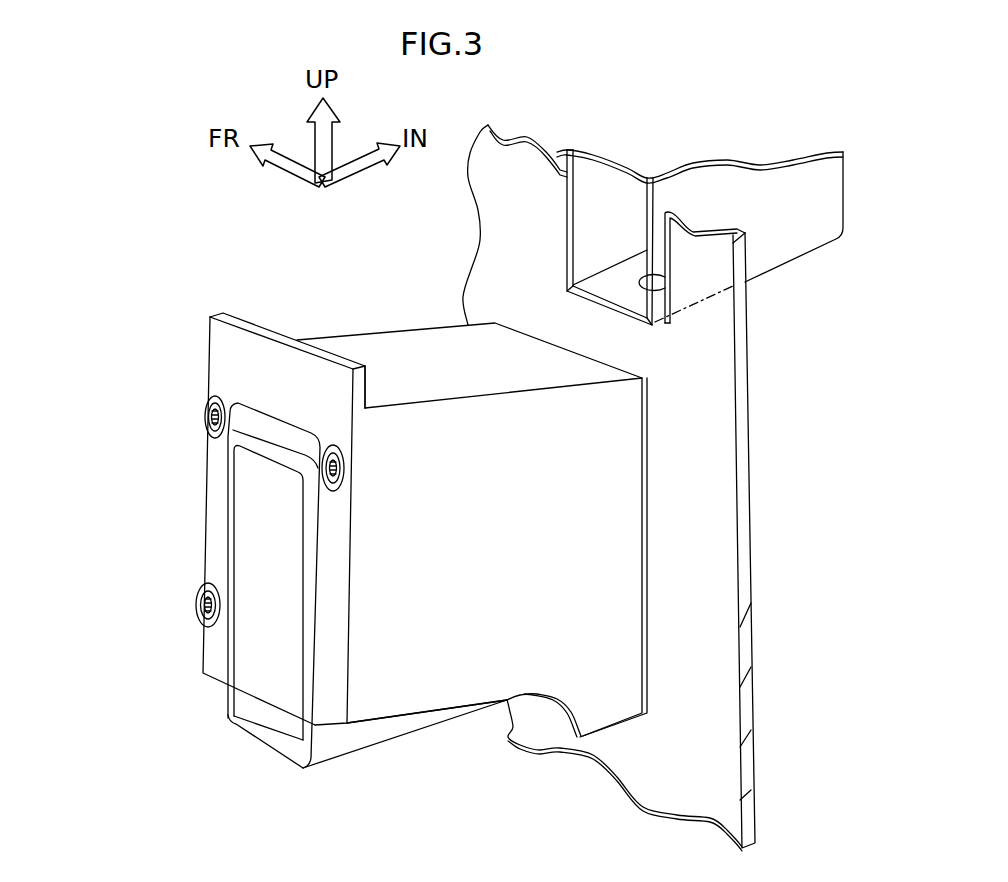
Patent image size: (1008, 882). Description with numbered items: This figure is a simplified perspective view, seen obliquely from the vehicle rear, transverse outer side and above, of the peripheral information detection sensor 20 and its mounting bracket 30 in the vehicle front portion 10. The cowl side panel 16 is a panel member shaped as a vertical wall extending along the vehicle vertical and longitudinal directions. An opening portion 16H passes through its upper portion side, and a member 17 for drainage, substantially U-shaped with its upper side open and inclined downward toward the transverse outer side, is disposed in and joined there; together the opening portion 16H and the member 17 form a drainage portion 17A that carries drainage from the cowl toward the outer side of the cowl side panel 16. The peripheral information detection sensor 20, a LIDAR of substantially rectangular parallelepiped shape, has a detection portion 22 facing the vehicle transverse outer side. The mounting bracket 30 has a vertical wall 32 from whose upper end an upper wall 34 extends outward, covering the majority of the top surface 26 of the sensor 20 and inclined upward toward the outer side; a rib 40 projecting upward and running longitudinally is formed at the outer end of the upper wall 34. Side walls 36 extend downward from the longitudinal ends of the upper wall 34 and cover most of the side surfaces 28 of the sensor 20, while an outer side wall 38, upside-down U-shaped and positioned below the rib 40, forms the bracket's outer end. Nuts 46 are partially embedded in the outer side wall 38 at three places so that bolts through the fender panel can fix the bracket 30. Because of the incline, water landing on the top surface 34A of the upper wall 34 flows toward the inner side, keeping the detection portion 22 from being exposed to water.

The vehicle front portion 10 is at (117, 132).
The cowl side panel 16 is at (644, 488).
The opening portion 16H is at (667, 278).
The member for drainage 17 is at (679, 238).
The drainage portion 17A is at (555, 258).
The peripheral information detection sensor 20 is at (355, 755).
The detection portion 22 is at (248, 697).
The top surface 26 is at (290, 435).
The side surfaces 28 is at (397, 725).
The mounting bracket 30 is at (187, 348).
The vertical wall 32 is at (508, 502).
The upper wall 34 is at (383, 355).
The top surface of upper wall 34A is at (430, 343).
The side walls 36 is at (623, 622).
The outer side wall 38 is at (208, 657).
The rib 40 is at (367, 390).
The nuts 46 is at (205, 427).